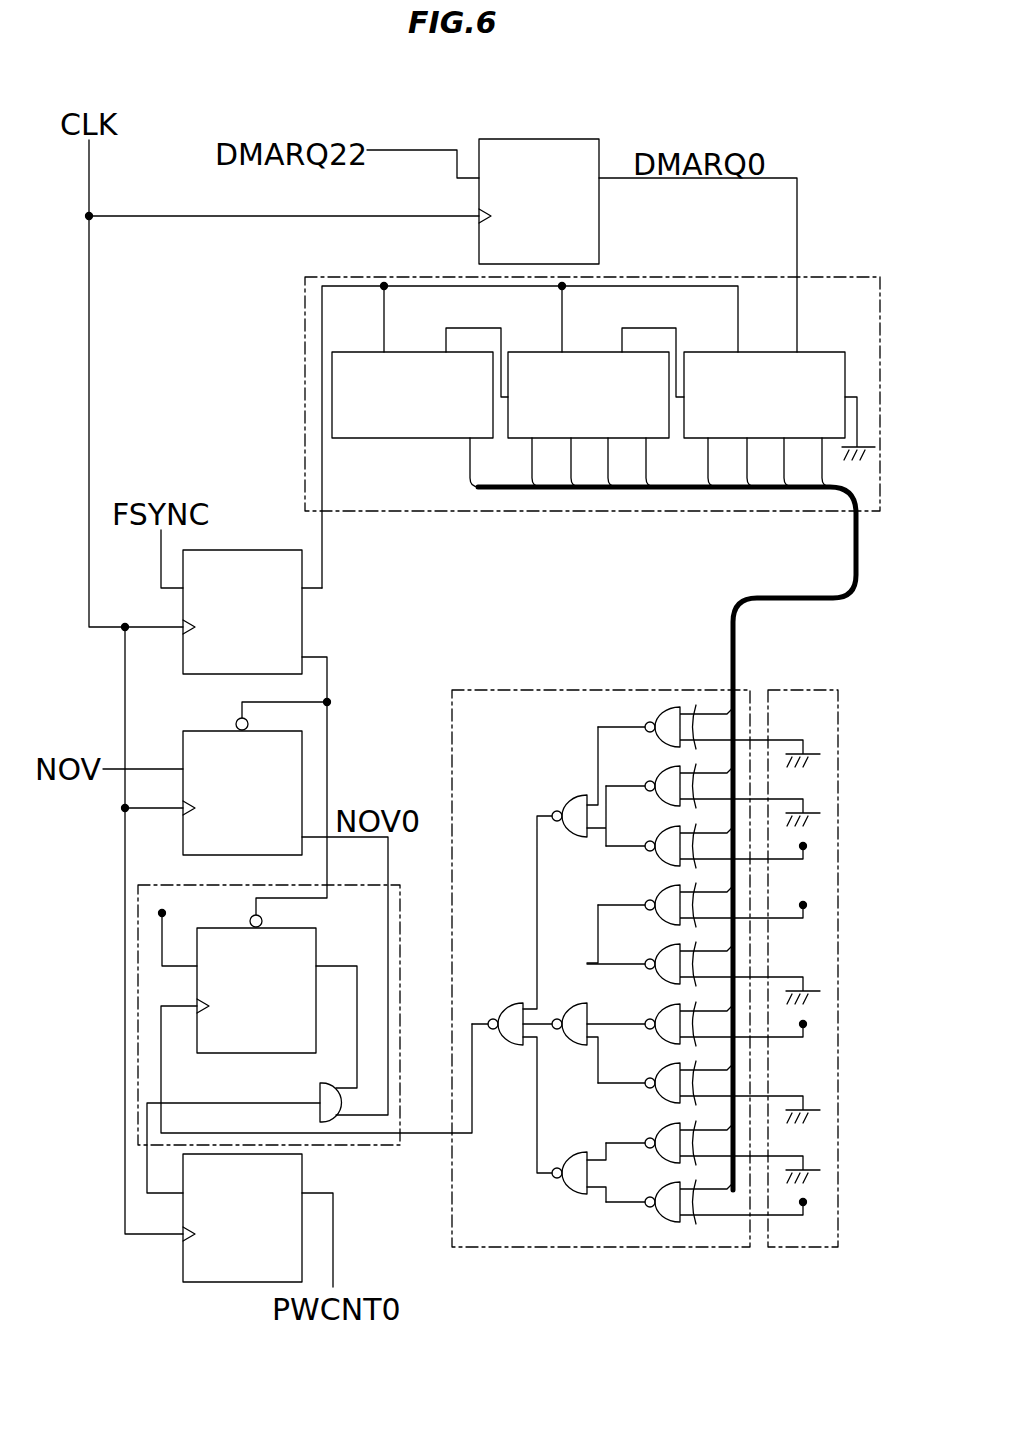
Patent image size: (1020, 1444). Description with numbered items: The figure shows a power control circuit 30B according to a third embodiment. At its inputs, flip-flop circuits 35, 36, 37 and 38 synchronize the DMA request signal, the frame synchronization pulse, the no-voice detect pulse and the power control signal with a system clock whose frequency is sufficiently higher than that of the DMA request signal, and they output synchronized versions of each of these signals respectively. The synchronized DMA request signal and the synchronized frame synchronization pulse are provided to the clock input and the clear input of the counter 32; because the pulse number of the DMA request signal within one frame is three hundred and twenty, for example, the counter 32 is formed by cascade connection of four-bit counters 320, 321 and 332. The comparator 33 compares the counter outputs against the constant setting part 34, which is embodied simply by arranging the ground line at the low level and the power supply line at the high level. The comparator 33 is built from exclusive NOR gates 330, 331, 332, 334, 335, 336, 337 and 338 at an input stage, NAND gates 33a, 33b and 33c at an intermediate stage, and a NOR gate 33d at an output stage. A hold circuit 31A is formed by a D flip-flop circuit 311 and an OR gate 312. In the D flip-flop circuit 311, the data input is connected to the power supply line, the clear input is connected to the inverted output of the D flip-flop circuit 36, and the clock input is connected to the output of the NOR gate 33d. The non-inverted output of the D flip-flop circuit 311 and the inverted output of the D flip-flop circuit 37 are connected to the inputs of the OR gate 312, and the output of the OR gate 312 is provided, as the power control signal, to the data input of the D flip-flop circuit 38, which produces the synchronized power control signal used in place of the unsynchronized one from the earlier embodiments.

The power control circuit 30B is at (199, 140).
The flip-flop circuit 35 is at (565, 139).
The counter 32 is at (682, 277).
The four-bit counter 332 is at (418, 350).
The four-bit counter 321 is at (590, 350).
The four-bit counter 320 is at (820, 328).
The D flip-flop circuit 36 is at (230, 550).
The D flip-flop circuit 37 is at (197, 731).
The hold circuit 31A is at (305, 1041).
The D flip-flop circuit 311 is at (302, 928).
The OR gate 312 is at (336, 1086).
The flip-flop circuit 38 is at (183, 1257).
The comparator 33 is at (503, 690).
The constant setting part 34 is at (802, 690).
The exclusive NOR gate 338 is at (668, 749).
The exclusive NOR gate 337 is at (670, 808).
The exclusive NOR gate 336 is at (668, 868).
The exclusive NOR gate 335 is at (668, 928).
The exclusive NOR gate 334 is at (668, 988).
The exclusive NOR gate 331 is at (670, 1168).
The exclusive NOR gate 330 is at (665, 1222).
The NAND gate 33a is at (568, 1164).
The NAND gate 33b is at (568, 1003).
The NAND gate 33c is at (568, 798).
The NOR gate 33d is at (505, 1005).